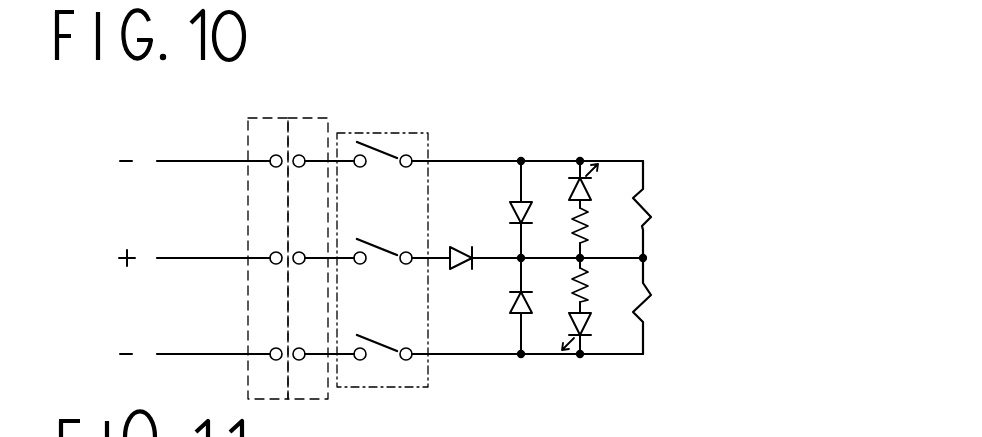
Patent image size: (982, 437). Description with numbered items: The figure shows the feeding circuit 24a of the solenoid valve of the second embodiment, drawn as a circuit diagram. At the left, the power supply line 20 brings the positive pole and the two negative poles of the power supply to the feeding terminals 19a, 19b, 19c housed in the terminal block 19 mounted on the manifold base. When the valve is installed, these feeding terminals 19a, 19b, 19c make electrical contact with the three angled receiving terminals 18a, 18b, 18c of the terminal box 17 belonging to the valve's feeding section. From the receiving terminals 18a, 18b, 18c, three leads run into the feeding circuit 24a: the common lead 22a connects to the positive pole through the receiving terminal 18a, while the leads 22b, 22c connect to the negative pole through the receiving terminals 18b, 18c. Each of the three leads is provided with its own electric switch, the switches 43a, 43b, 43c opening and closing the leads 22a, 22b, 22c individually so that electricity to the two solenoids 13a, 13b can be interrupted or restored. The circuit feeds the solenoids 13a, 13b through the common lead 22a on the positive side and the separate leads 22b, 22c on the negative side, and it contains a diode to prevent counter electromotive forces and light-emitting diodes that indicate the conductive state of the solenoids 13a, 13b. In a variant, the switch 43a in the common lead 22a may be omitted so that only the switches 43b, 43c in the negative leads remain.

The solenoid 13a is at (645, 203).
The solenoid 13b is at (645, 307).
The terminal box 17 is at (302, 118).
The receiving terminal 18a is at (297, 264).
The receiving terminal 18b is at (298, 168).
The receiving terminal 18c is at (297, 362).
The terminal block 19 is at (270, 117).
The feeding terminal 19a is at (273, 253).
The feeding terminal 19b is at (271, 155).
The feeding terminal 19c is at (273, 350).
The power supply line 20 is at (168, 262).
The common lead 22a is at (437, 259).
The lead 22b is at (440, 163).
The lead 22c is at (442, 356).
The feeding circuit 24a is at (461, 150).
The electric switch 43a is at (383, 252).
The electric switch 43b is at (384, 157).
The electric switch 43c is at (398, 328).